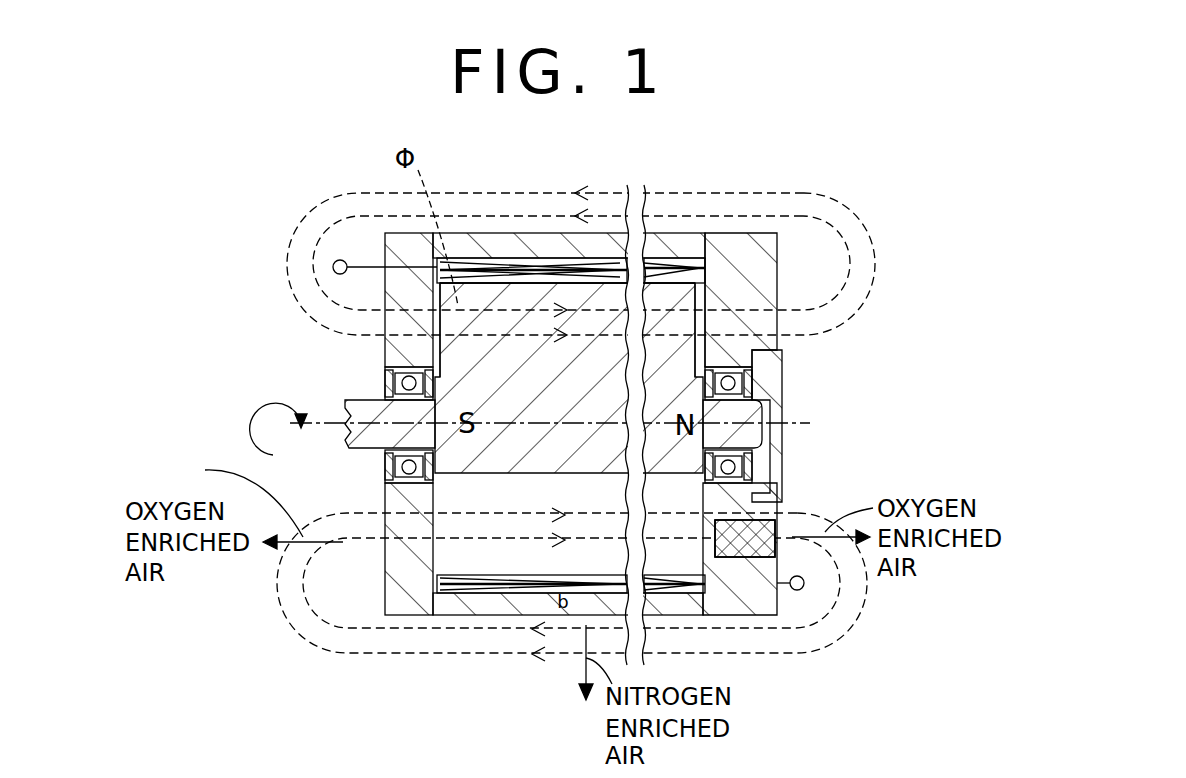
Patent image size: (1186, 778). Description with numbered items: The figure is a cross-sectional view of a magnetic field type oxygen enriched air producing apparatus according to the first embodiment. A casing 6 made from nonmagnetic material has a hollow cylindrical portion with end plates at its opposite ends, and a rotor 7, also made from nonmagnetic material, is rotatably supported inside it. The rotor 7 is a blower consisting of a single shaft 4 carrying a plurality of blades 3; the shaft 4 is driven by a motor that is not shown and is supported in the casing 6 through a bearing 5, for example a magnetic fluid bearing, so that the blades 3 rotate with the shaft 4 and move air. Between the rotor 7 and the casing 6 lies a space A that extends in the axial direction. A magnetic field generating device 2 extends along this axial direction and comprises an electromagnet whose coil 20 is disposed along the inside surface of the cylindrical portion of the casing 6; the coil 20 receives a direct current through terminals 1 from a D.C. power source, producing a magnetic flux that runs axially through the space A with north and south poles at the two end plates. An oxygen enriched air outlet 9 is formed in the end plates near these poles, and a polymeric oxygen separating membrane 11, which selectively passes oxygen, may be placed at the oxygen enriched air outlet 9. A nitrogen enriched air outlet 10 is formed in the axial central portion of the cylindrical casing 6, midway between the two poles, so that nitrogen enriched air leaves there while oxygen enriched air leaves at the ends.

The terminals 1 is at (342, 260).
The magnetic field generating device 2 is at (691, 250).
The blades 3 is at (697, 298).
The shaft 4 is at (370, 399).
The bearing 5 is at (755, 380).
The casing 6 is at (762, 327).
The rotor 7 is at (454, 266).
The oxygen enriched air outlet 9 is at (780, 517).
The nitrogen enriched air outlet 10 is at (553, 600).
The polymeric oxygen separating membrane 11 is at (740, 558).
The coil 20 is at (467, 577).
The space A is at (677, 327).